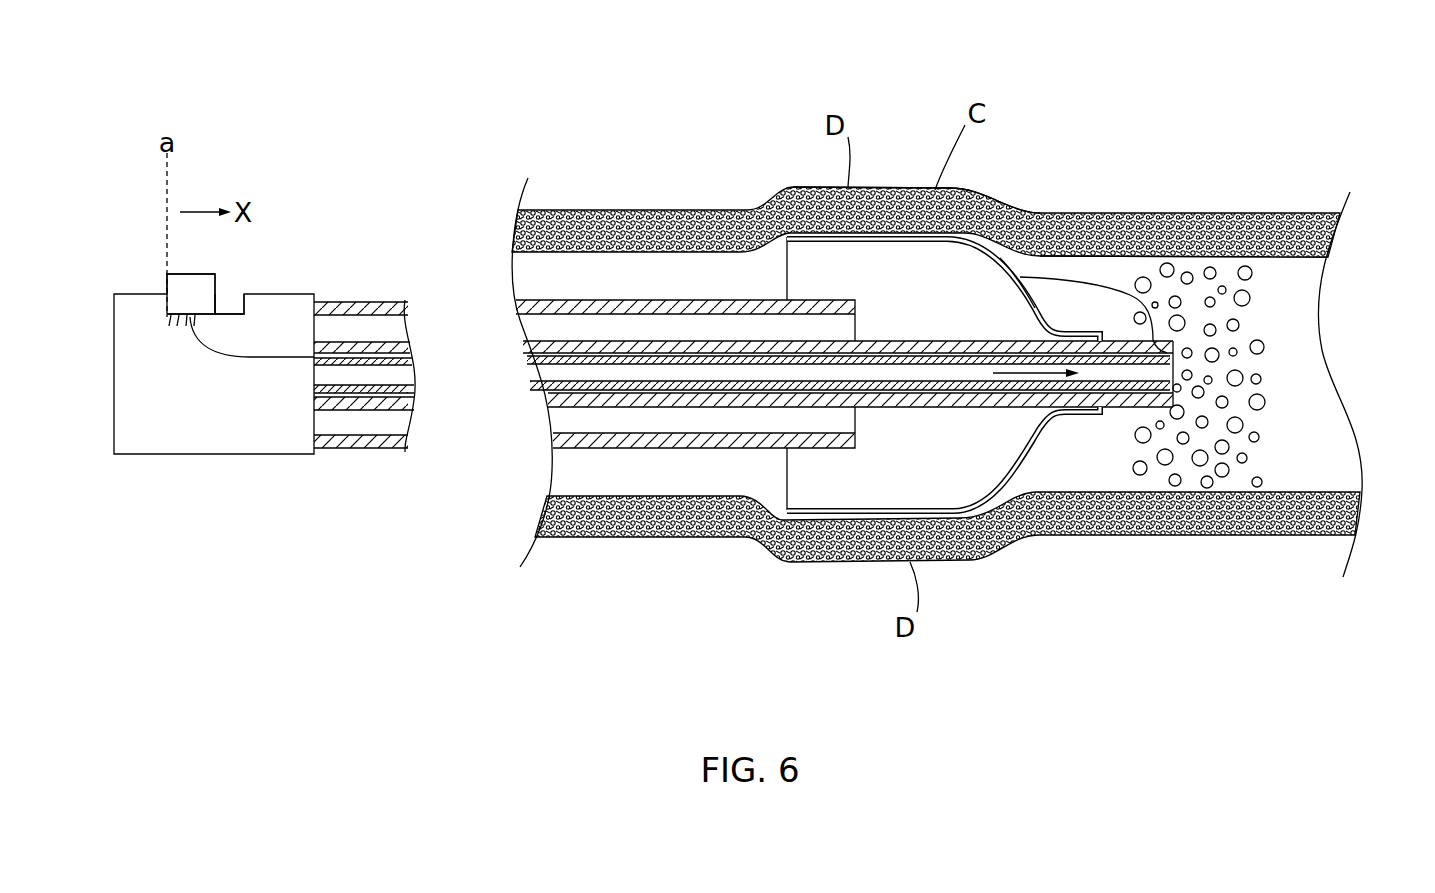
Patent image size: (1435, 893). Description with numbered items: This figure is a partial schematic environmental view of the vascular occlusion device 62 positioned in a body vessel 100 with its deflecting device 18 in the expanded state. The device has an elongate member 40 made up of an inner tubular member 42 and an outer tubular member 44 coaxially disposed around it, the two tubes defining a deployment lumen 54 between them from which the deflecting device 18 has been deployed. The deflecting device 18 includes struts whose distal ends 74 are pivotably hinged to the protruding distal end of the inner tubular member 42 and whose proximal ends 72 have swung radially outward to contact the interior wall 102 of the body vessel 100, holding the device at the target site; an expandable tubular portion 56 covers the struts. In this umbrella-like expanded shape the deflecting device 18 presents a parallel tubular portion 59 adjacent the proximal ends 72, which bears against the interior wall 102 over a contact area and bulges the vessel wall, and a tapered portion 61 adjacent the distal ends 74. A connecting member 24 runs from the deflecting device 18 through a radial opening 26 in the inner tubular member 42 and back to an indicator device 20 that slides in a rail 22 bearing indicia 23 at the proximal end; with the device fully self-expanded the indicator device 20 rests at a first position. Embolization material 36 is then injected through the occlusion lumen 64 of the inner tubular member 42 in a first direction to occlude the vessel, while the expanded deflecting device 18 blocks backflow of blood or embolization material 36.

The deflecting device 18 is at (1052, 473).
The indicator device 20 is at (167, 283).
The rail 22 is at (236, 315).
The indicia 23 is at (168, 320).
The connecting member 24 is at (270, 358).
The radial opening 26 is at (1167, 263).
The embolization material 36 is at (1243, 360).
The elongate member 40 is at (814, 326).
The inner tubular member 42 is at (717, 450).
The outer tubular member 44 is at (712, 300).
The deployment lumen 54 is at (685, 313).
The tubular portion 56 is at (787, 470).
The parallel tubular portion 59 is at (900, 187).
The tapered portion 61 is at (1017, 275).
The vascular occlusion device 62 is at (530, 376).
The occlusion lumen 64 is at (597, 387).
The proximal end 72 is at (793, 187).
The distal end 74 is at (1088, 330).
The body vessel 100 is at (1273, 212).
The interior wall 102 is at (1295, 257).